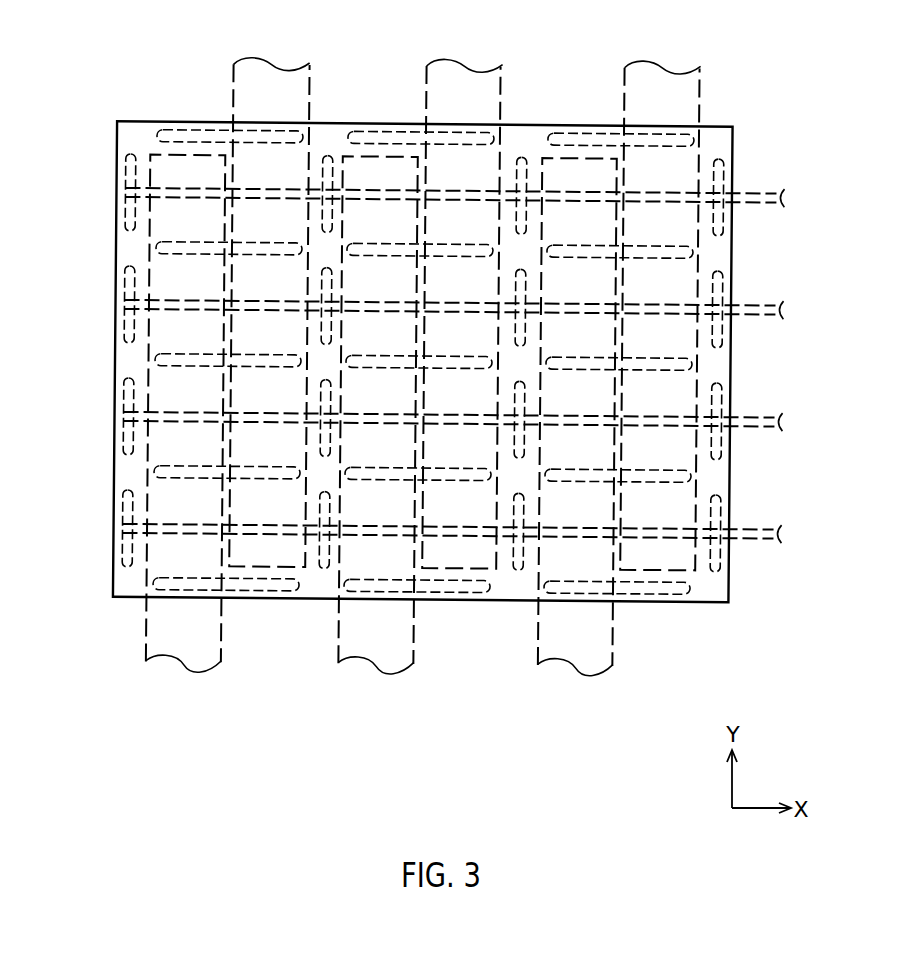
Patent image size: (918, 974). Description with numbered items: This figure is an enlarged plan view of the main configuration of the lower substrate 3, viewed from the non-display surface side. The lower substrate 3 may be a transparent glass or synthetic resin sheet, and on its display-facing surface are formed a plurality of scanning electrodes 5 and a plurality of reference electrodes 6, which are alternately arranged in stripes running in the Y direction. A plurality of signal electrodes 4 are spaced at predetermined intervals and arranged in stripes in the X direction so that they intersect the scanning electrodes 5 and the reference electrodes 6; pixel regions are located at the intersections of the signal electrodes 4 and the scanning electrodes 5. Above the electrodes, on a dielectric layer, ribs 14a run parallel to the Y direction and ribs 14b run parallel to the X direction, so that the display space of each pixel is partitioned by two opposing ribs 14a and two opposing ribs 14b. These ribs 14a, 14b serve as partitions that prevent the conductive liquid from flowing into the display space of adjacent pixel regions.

The lower substrate 3 is at (135, 123).
The signal electrodes 4 is at (750, 200).
The scanning electrodes 5 is at (184, 650).
The reference electrodes 6 is at (270, 77).
The ribs 14a is at (723, 163).
The ribs 14b is at (586, 129).